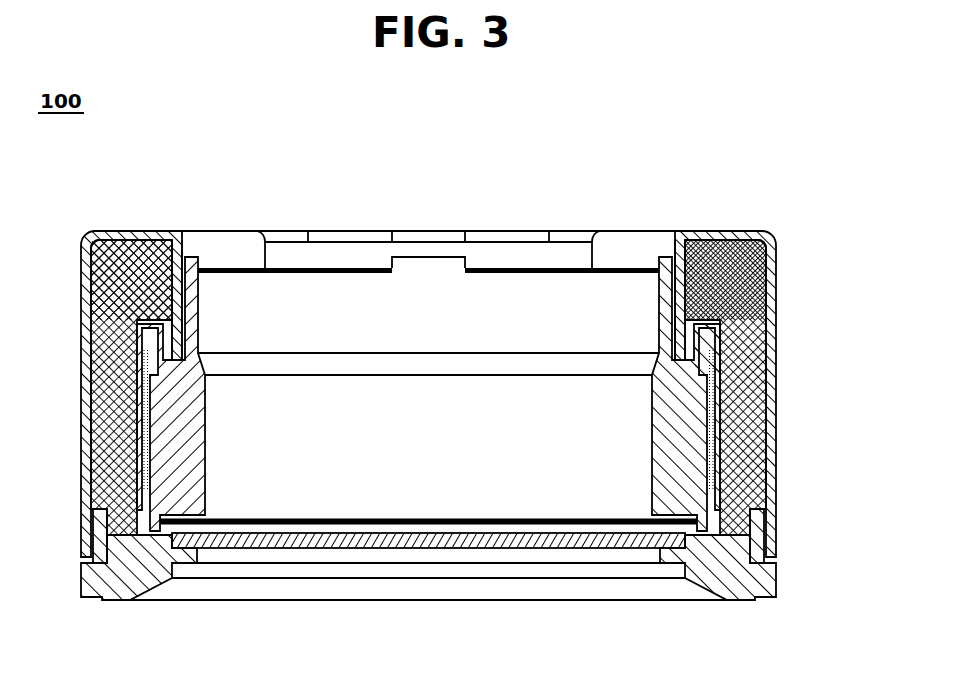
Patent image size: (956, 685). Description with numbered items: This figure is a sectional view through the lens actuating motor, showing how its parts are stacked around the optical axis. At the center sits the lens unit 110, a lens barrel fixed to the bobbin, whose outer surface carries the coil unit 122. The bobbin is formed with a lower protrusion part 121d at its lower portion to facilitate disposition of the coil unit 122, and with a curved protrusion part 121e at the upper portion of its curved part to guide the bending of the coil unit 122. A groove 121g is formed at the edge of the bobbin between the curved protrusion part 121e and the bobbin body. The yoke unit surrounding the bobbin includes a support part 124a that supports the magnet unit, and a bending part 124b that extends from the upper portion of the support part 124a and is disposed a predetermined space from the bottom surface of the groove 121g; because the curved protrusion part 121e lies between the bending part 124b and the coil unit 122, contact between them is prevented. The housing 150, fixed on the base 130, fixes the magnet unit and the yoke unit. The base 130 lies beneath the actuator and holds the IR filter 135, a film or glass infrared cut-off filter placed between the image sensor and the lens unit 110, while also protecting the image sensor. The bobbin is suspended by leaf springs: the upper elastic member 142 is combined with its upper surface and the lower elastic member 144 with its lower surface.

The lens unit 110 is at (355, 312).
The lower protrusion part 121d is at (763, 526).
The curved protrusion part 121e is at (718, 325).
The groove 121g is at (683, 372).
The coil unit 122 is at (715, 415).
The support part 124a is at (776, 256).
The bending part 124b is at (682, 300).
The base 130 is at (748, 582).
The IR filter 135 is at (438, 549).
The upper elastic member 142 is at (242, 267).
The lower elastic member 144 is at (550, 527).
The housing 150 is at (728, 275).